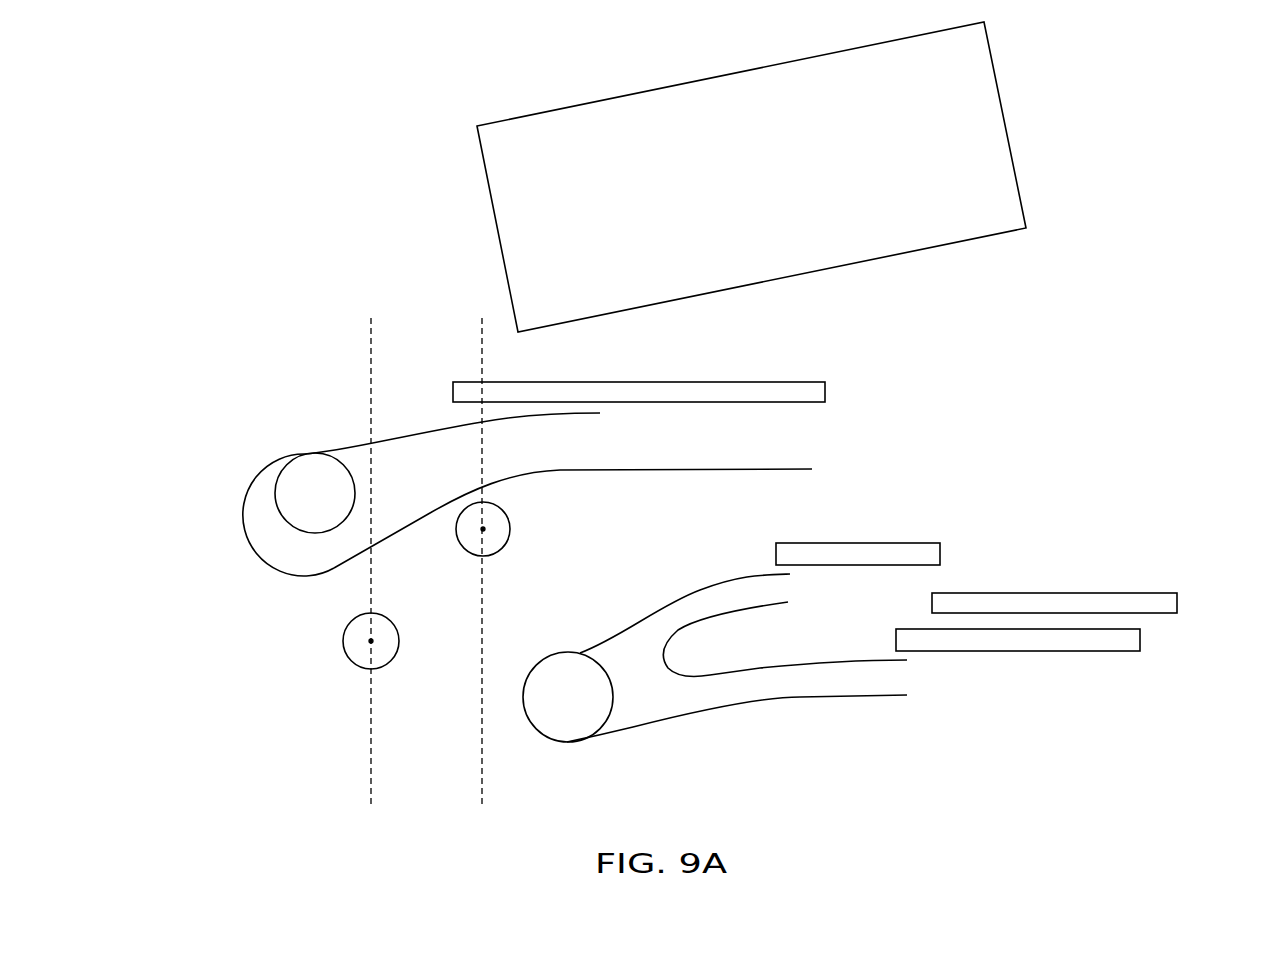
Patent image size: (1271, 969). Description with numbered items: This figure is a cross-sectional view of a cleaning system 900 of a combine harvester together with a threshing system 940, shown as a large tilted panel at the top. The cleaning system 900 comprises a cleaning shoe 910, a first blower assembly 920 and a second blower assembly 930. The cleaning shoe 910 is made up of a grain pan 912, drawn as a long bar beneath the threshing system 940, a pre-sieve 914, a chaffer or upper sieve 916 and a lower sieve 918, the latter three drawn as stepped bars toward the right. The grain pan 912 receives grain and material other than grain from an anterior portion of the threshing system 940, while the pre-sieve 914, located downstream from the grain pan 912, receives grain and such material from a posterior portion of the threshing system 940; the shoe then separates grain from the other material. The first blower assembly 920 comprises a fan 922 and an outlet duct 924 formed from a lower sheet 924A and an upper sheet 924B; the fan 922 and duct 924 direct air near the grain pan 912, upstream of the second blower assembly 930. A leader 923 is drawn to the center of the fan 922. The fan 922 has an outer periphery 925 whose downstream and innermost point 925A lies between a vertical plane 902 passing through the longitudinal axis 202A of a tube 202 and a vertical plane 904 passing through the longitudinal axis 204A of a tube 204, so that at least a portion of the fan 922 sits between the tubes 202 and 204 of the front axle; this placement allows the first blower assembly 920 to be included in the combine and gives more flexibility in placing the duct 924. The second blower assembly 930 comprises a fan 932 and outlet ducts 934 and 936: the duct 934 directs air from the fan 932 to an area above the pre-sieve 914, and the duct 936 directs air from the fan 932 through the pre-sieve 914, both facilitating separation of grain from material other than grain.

The cleaning system 900 is at (300, 165).
The threshing system 940 is at (787, 191).
The vertical plane 904 is at (370, 346).
The vertical plane 902 is at (480, 346).
The grain pan 912 is at (825, 386).
The first blower assembly 920 is at (250, 455).
The fan 922 is at (312, 453).
The roller axis 923 is at (315, 493).
The outer periphery 925 is at (290, 527).
The downstream and innermost point 925A is at (355, 493).
The outlet duct 924 is at (558, 485).
The lower sheet 924A is at (653, 470).
The upper sheet 924B is at (520, 420).
The tube 202 is at (508, 518).
The longitudinal axis 202A is at (483, 529).
The tube 204 is at (393, 624).
The longitudinal axis 204A is at (371, 641).
The second blower assembly 930 is at (555, 637).
The fan 932 is at (567, 742).
The outlet duct 934 is at (708, 602).
The outlet duct 936 is at (783, 678).
The cleaning shoe 910 is at (895, 510).
The pre-sieve 914 is at (940, 556).
The chaffer or upper sieve 916 is at (1177, 603).
The lower sieve 918 is at (1140, 640).